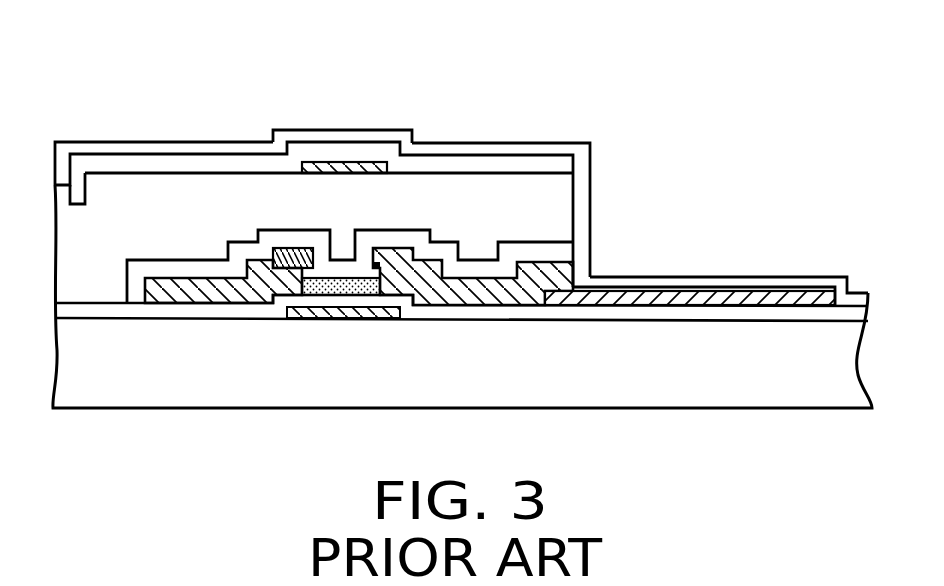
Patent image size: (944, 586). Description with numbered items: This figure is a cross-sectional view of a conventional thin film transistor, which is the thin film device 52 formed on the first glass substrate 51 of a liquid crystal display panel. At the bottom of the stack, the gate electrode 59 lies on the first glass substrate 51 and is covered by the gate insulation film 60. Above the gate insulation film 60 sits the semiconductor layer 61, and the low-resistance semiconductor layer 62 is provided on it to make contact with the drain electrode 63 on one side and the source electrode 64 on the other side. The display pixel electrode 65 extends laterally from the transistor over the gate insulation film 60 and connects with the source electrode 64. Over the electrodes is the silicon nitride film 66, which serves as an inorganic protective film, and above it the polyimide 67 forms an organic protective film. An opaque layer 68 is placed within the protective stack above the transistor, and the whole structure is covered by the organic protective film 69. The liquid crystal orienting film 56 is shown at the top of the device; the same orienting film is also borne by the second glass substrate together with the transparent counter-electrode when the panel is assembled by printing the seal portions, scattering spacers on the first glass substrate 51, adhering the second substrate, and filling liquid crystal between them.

The first glass substrate 51 is at (748, 388).
The thin film device 52 is at (387, 115).
The liquid crystal orienting film 56 is at (653, 283).
The gate electrode 59 is at (378, 318).
The gate insulation film 60 is at (597, 312).
The semiconductor layer 61 is at (336, 296).
The low-resistance semiconductor layer 62 is at (306, 262).
The drain electrode 63 is at (202, 290).
The source electrode 64 is at (492, 296).
The display pixel electrode 65 is at (777, 290).
The silicon nitride film 66 is at (535, 250).
The polyimide 67 is at (452, 193).
The opaque layer 68 is at (347, 162).
The organic protective film 69 is at (150, 162).